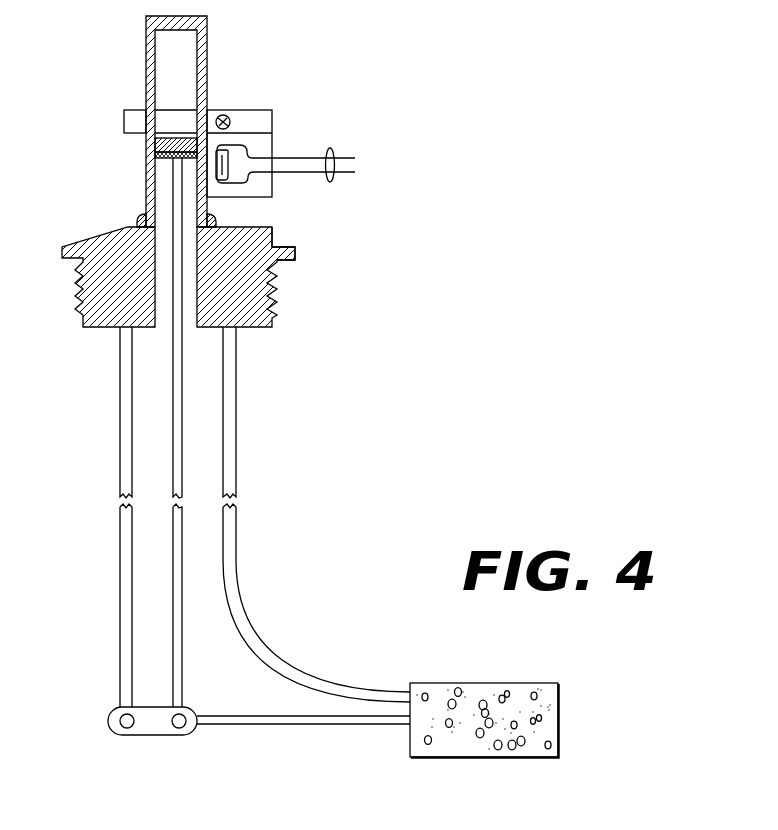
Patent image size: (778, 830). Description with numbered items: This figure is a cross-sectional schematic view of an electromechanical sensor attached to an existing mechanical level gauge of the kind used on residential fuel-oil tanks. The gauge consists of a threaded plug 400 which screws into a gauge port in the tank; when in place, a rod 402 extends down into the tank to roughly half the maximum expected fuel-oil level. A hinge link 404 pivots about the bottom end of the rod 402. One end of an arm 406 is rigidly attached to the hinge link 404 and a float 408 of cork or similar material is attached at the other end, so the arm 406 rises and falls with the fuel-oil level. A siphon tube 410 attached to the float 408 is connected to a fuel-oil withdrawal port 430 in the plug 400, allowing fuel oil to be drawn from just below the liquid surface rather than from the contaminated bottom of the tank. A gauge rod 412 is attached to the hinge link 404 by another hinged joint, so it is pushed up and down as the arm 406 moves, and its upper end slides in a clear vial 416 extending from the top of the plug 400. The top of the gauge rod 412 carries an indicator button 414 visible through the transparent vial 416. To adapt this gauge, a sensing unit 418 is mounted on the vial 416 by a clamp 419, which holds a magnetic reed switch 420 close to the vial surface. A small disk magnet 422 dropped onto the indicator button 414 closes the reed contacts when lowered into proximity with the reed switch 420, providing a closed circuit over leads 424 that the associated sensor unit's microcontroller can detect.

The threaded plug 400 is at (278, 290).
The rod 402 is at (119, 425).
The hinge link 404 is at (168, 736).
The arm 406 is at (355, 726).
The float 408 is at (478, 683).
The siphon tube 410 is at (237, 427).
The gauge rod 412 is at (185, 662).
The indicator button 414 is at (155, 158).
The clear vial 416 is at (147, 38).
The sensing unit 418 is at (272, 116).
The clamp 419 is at (178, 100).
The magnetic reed switch 420 is at (228, 170).
The disk magnet 422 is at (155, 145).
The leads 424 is at (334, 152).
The fuel-oil withdrawal port 430 is at (278, 233).